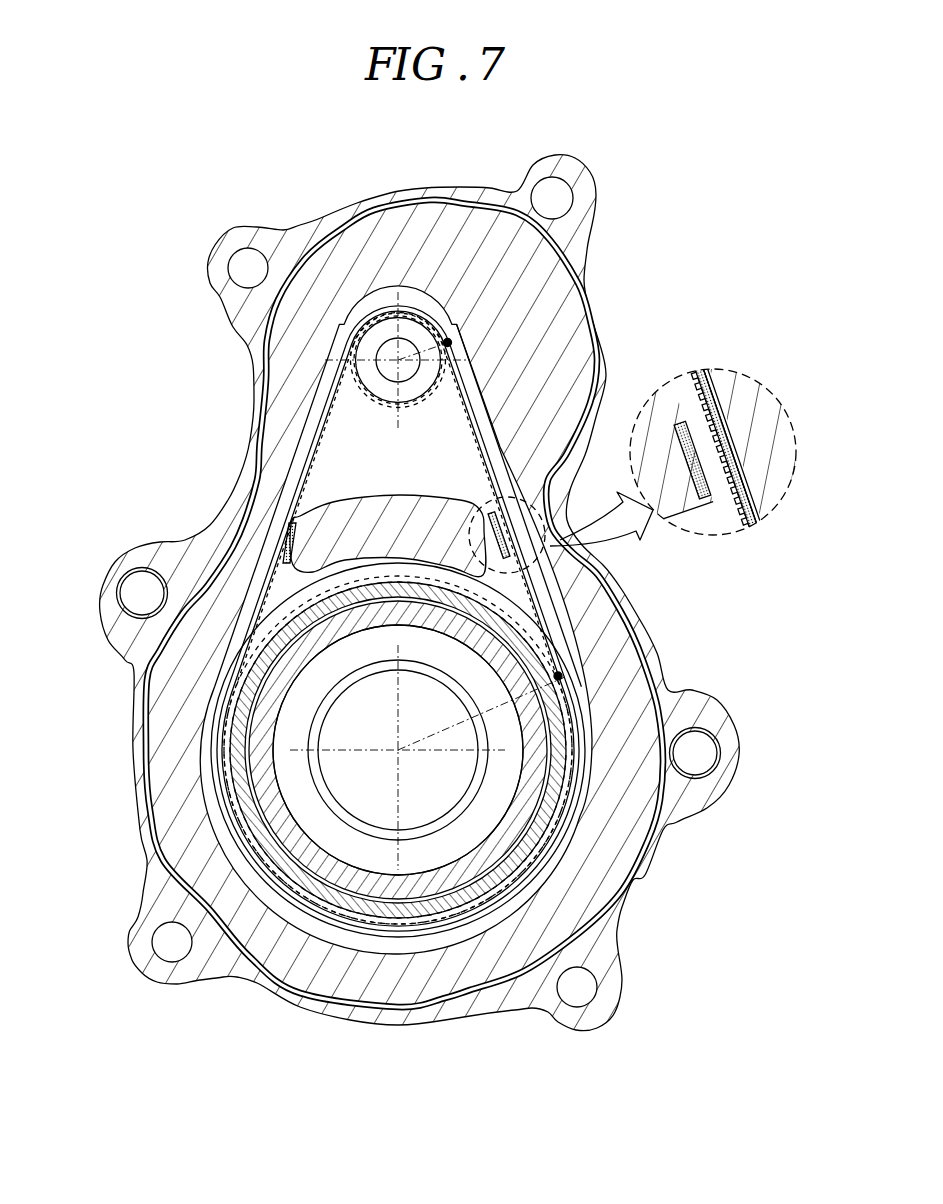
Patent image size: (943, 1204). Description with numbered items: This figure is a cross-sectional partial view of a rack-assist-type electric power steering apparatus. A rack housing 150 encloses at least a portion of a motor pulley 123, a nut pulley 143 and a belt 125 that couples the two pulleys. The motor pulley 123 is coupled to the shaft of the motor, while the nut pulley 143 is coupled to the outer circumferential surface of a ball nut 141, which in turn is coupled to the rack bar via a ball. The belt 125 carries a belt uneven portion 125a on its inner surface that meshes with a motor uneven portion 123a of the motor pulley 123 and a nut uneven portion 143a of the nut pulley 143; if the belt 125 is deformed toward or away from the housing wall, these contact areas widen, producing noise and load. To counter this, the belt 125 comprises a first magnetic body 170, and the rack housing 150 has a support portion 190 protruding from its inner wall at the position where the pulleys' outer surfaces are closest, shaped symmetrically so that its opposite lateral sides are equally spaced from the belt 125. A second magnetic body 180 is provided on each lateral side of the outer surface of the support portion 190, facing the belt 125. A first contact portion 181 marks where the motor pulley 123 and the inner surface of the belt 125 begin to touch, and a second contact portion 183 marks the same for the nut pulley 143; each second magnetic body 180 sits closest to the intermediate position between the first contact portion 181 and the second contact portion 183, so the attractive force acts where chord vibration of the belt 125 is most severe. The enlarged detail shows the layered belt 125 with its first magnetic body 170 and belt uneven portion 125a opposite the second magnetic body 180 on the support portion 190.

The rack housing 150 is at (343, 265).
The first contact portion 181 is at (450, 341).
The belt 125 is at (458, 372).
The motor pulley 123 is at (378, 353).
The motor uneven portion 123a is at (358, 388).
The support portion 190 is at (330, 545).
The second magnetic body 180 is at (680, 432).
The first magnetic body 170 is at (712, 372).
The belt uneven portion 125a is at (729, 497).
The second contact portion 183 is at (560, 676).
The nut uneven portion 143a is at (285, 658).
The nut pulley 143 is at (240, 793).
The ball nut 141 is at (545, 790).